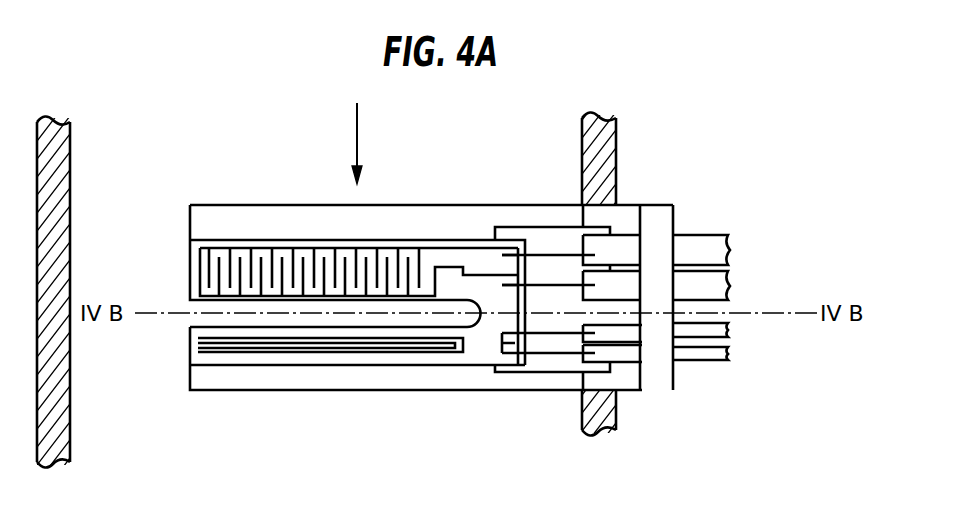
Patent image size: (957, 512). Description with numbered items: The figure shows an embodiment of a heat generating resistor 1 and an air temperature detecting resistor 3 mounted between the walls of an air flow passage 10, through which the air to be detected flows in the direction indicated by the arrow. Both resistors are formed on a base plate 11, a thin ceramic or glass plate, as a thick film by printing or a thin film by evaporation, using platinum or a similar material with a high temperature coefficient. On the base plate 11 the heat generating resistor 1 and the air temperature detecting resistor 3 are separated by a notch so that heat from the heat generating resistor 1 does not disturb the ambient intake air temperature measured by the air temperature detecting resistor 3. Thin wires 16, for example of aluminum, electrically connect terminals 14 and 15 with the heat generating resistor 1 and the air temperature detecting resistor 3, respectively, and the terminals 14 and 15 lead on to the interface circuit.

The heat generating resistor 1 is at (200, 283).
The air temperature detecting resistor 3 is at (198, 350).
The air flow passage 10 is at (73, 186).
The base plate 11 is at (314, 205).
The terminal 14 is at (729, 248).
The terminal 15 is at (729, 334).
The thin wire 16 is at (545, 242).